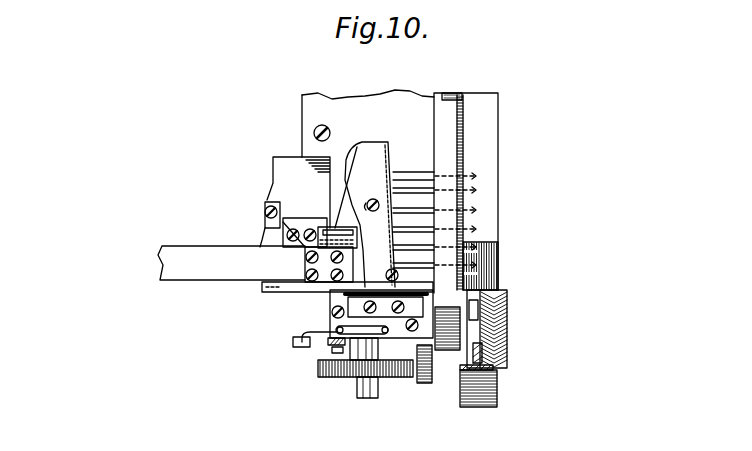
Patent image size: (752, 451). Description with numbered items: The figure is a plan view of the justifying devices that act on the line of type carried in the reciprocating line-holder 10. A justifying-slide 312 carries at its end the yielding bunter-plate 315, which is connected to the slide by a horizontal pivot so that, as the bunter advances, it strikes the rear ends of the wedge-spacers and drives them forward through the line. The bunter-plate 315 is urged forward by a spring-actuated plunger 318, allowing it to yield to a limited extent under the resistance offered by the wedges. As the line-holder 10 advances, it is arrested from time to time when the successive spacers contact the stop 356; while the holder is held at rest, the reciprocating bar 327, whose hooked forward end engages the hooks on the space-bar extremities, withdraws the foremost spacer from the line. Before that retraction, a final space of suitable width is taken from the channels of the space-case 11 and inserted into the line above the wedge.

The reciprocating line-holder 10 is at (379, 220).
The justifying-slide 312 is at (255, 250).
The yielding bunter-plate 315 is at (371, 157).
The spring-actuated plunger 318 is at (360, 255).
The reciprocating bar 327 is at (322, 292).
The stop 356 is at (507, 292).
The space-case 11 is at (330, 286).